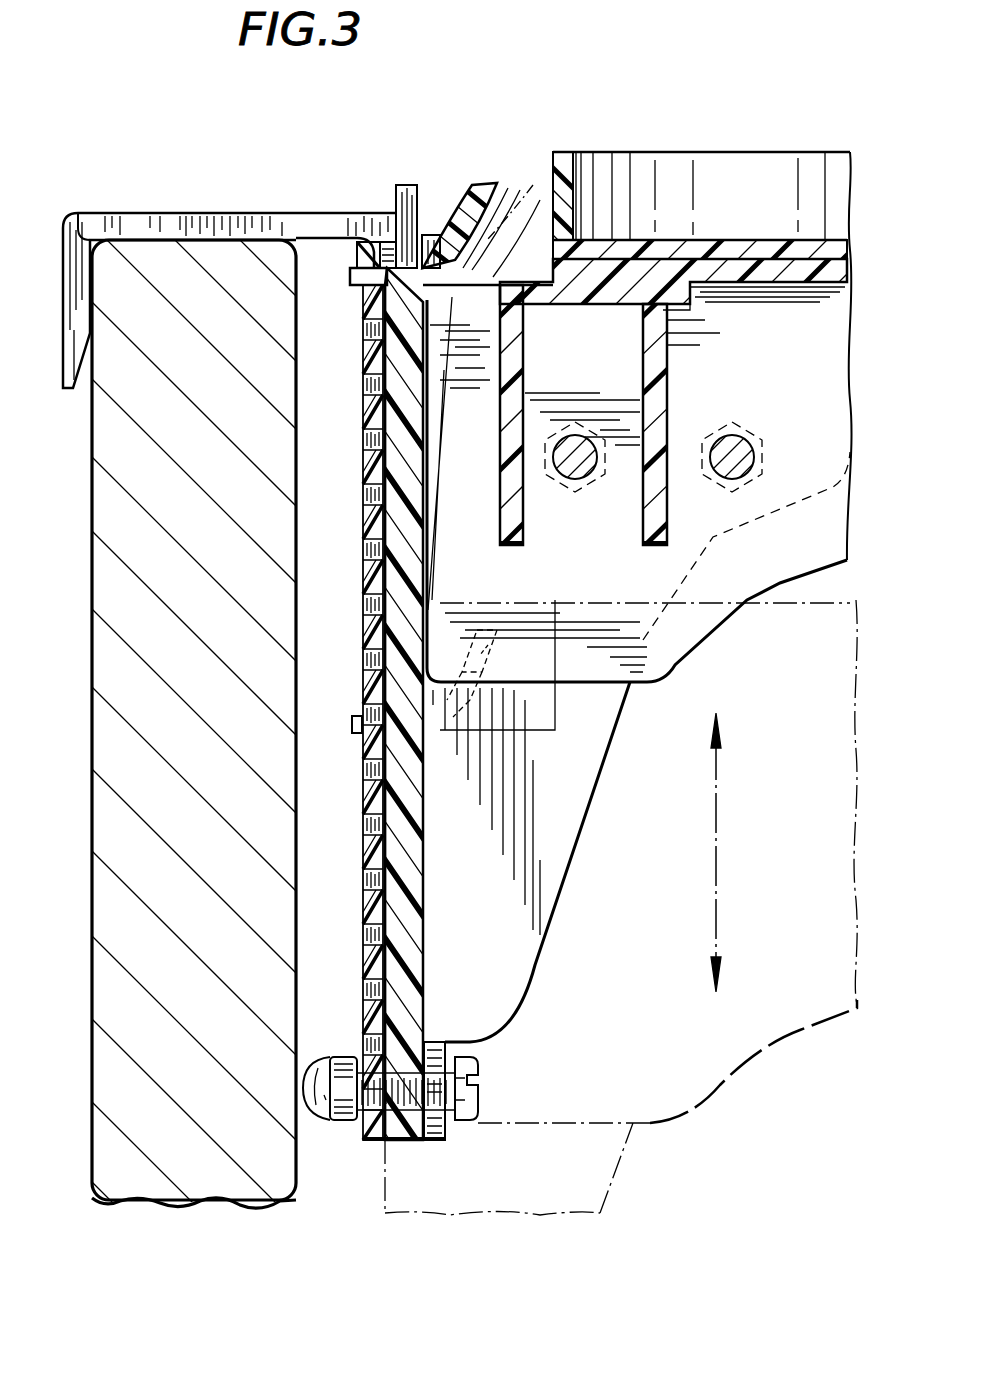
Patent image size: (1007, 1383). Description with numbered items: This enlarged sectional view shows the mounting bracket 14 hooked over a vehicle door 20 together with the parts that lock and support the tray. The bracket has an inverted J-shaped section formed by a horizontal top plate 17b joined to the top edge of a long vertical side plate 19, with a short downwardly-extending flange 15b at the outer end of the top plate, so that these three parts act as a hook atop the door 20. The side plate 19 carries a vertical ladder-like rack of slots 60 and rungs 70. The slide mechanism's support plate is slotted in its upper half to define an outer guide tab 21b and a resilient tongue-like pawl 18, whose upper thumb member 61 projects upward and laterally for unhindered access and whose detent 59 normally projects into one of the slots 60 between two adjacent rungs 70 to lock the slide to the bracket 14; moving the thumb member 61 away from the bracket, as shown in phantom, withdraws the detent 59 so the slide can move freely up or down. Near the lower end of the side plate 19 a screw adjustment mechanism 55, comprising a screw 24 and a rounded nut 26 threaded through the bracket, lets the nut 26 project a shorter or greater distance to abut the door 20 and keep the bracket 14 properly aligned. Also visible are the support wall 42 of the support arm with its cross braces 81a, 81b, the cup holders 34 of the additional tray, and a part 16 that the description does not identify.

The mounting bracket 14 is at (148, 210).
The top plate 17b is at (240, 213).
The flange 15b is at (70, 360).
The vehicle door 20 is at (210, 677).
The outer guide tab 21b is at (403, 182).
The side plate 19 is at (430, 235).
The pawl 18 is at (527, 183).
The thumb member 61 is at (480, 200).
The cup holder 34 is at (650, 165).
The support wall 42 is at (810, 285).
The detent 59 is at (350, 274).
The rung 70 is at (366, 300).
The slot 60 is at (366, 444).
The cross brace 81a is at (515, 525).
The cross brace 81b is at (662, 525).
The movable body 16 is at (540, 950).
The screw 24 is at (472, 1068).
The rounded nut 26 is at (318, 1120).
The screw adjustment mechanism 55 is at (464, 1130).